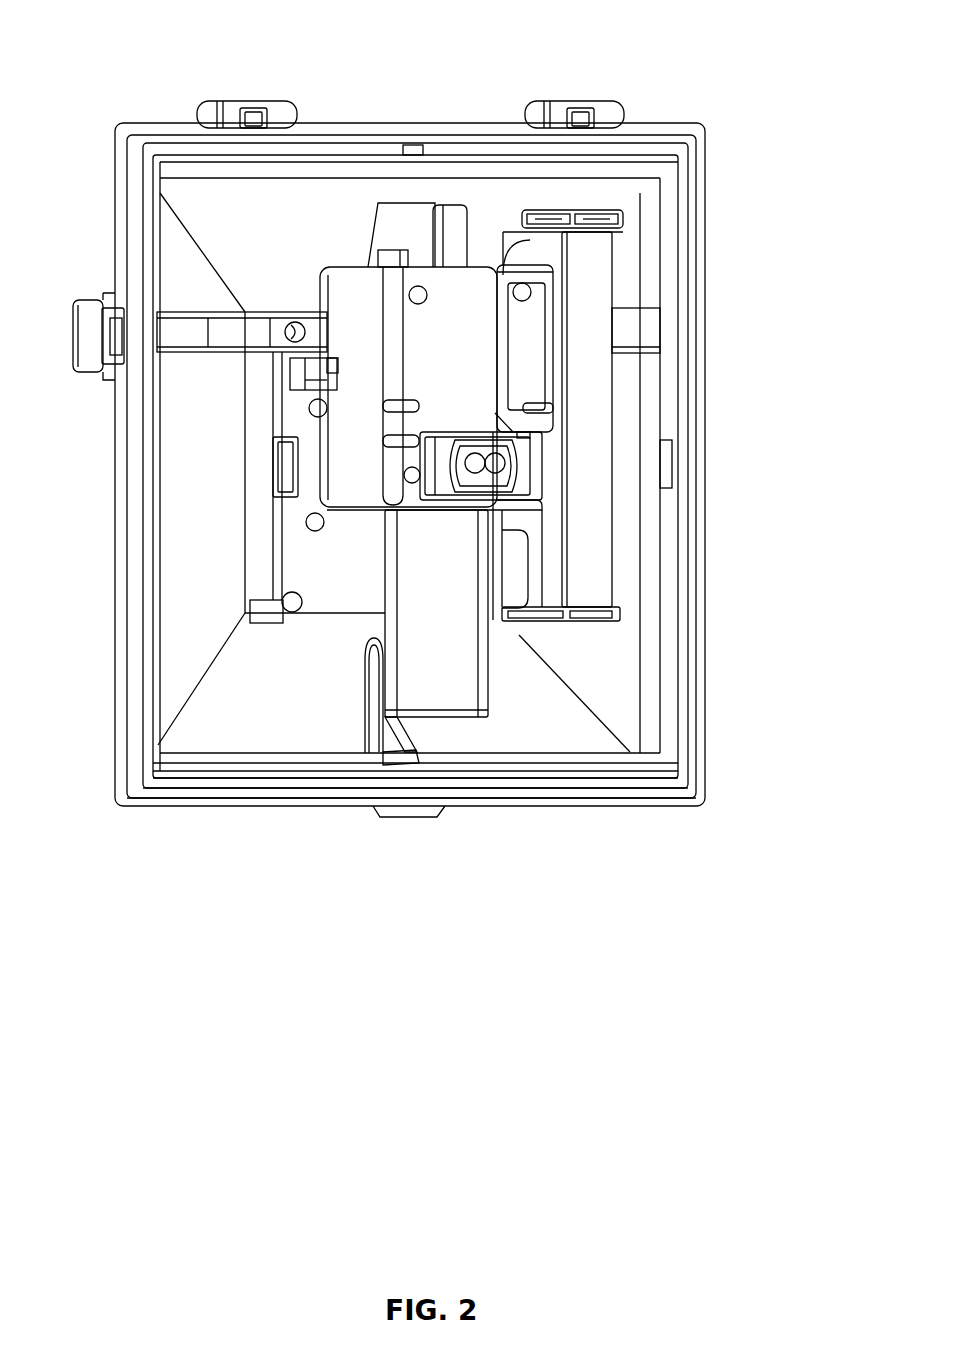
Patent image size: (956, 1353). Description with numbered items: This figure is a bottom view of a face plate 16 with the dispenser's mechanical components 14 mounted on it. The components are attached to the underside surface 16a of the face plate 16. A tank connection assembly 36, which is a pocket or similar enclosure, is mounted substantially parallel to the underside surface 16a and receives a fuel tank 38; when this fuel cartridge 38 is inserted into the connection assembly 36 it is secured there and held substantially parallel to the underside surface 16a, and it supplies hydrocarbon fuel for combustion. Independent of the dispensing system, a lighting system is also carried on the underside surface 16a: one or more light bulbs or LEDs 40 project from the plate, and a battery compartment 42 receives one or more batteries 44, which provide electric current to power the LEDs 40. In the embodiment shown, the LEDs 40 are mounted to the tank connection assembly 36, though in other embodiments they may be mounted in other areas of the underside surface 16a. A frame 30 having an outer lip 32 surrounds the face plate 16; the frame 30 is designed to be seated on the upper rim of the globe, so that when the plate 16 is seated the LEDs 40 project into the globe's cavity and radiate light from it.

The mechanical components 14 is at (552, 462).
The face plate 16 is at (713, 558).
The underside surface 16a is at (597, 740).
The frame 30 is at (705, 788).
The outer lip 32 is at (187, 795).
The tank connection assembly 36 is at (473, 303).
The fuel tank 38 is at (458, 703).
The LEDs 40 is at (500, 468).
The battery compartment 42 is at (607, 205).
The batteries 44 is at (595, 265).